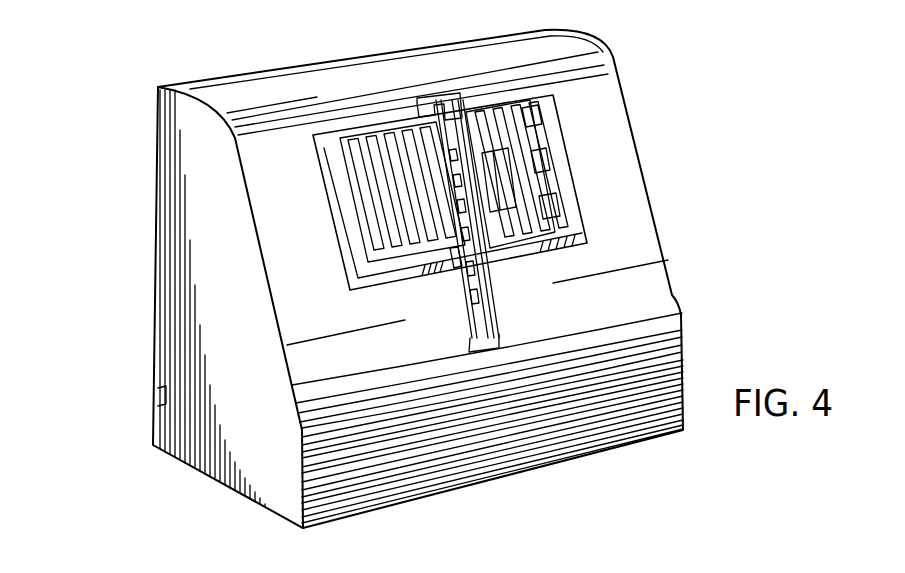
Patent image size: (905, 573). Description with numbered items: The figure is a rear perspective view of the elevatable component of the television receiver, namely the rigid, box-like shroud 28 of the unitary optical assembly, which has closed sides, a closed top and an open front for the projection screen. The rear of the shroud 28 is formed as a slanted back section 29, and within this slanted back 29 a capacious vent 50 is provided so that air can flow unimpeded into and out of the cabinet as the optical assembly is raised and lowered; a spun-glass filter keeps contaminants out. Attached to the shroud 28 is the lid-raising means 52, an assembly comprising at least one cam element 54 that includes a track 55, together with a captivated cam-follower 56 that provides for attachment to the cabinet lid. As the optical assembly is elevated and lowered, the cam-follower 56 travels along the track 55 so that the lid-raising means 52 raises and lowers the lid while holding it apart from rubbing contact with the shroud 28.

The shroud means 28 is at (210, 213).
The slanted back section 29 is at (600, 139).
The vent 50 is at (507, 123).
The lid-raising means 52 is at (473, 97).
The cam element 54 is at (470, 320).
The track 55 is at (490, 287).
The cam-follower 56 is at (462, 177).